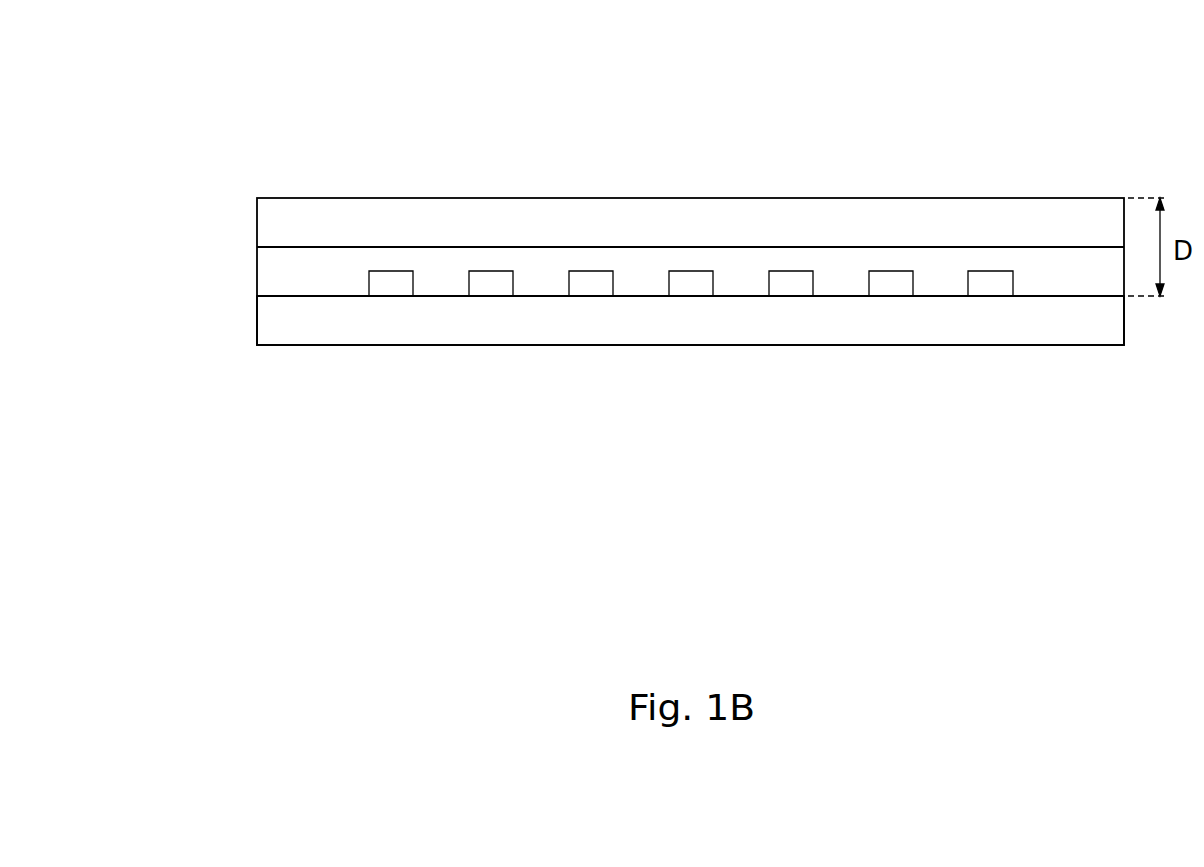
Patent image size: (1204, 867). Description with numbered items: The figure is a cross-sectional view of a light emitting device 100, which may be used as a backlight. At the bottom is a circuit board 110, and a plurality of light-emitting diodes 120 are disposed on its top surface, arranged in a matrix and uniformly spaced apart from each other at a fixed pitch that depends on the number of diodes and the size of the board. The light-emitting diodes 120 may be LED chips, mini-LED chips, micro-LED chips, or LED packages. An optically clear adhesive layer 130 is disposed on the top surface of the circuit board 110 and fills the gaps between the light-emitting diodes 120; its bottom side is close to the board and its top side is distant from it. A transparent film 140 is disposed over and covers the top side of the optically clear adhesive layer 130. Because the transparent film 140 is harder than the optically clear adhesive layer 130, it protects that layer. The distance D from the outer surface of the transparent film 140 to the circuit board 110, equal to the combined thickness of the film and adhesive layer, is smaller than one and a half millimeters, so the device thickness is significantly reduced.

The light emitting device 100 is at (191, 38).
The circuit board 110 is at (268, 320).
The light-emitting diodes 120 is at (390, 287).
The optically clear adhesive layer 130 is at (268, 270).
The transparent film 140 is at (268, 220).